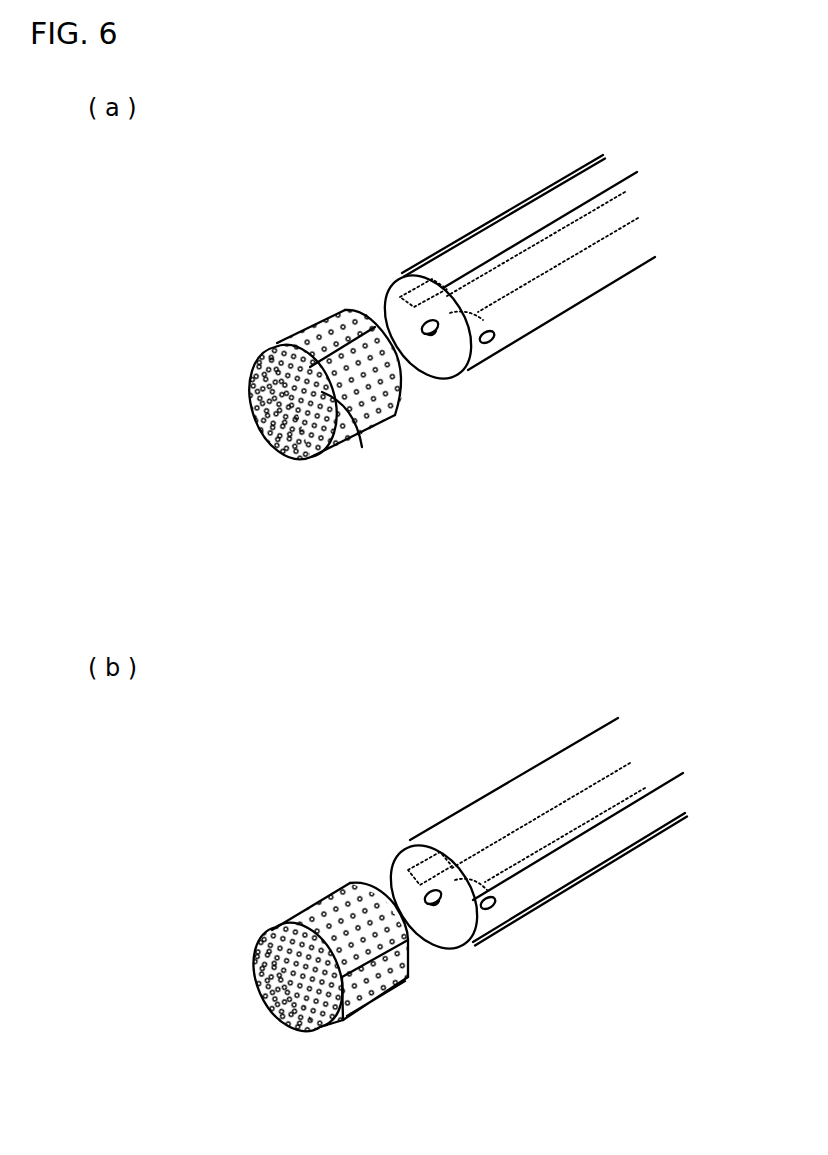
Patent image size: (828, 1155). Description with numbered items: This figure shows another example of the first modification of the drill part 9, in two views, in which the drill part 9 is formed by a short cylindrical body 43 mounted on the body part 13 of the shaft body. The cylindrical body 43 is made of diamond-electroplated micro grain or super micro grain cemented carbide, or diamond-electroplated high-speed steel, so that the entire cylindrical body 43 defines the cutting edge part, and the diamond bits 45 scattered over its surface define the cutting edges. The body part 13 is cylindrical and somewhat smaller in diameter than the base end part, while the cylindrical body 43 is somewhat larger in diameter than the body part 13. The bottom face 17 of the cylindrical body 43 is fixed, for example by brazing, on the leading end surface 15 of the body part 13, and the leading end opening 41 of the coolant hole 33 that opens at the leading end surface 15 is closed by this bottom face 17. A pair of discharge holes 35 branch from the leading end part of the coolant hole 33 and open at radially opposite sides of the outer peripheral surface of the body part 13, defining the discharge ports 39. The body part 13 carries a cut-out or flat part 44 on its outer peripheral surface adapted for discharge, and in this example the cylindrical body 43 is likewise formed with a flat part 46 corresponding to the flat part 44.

The drill part 9 is at (299, 300).
The body part 13 is at (573, 175).
The leading end surface 15 is at (382, 330).
The bottom face 17 is at (363, 313).
The coolant hole 33 is at (568, 247).
The discharge holes 35 is at (430, 283).
The discharge ports 39 is at (413, 263).
The leading end opening 41 is at (438, 337).
The short cylindrical body 43 is at (360, 407).
The flat part 44 is at (520, 213).
The diamond bits 45 is at (405, 397).
The flat part 46 is at (302, 460).